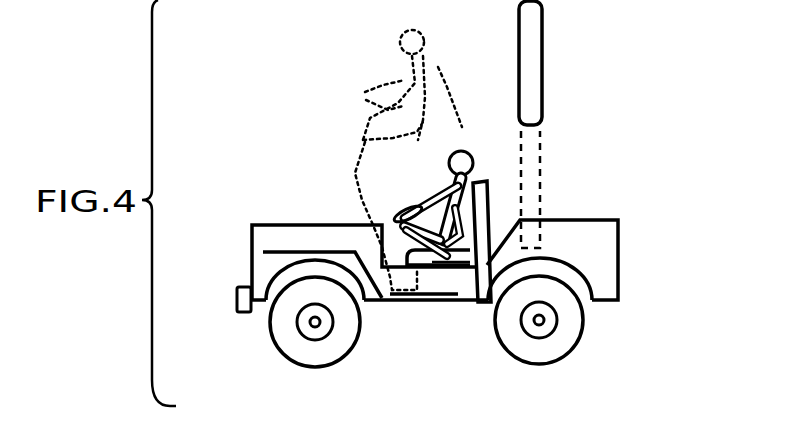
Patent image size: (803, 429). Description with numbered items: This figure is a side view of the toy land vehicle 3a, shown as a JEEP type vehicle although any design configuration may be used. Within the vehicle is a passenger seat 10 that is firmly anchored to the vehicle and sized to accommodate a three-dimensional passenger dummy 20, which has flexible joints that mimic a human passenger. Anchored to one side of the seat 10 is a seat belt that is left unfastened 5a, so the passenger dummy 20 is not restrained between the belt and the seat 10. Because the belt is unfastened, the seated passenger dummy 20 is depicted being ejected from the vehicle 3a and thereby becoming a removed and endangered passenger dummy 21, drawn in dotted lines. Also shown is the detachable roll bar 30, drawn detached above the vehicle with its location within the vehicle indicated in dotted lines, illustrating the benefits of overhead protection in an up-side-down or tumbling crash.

The land vehicle 3a is at (608, 217).
The unfastened seat belt 5a is at (447, 264).
The passenger seat 10 is at (483, 302).
The passenger figure 20 is at (466, 150).
The removed and endangered passenger figure 21 is at (402, 33).
The removable roll bar 30 is at (547, 53).